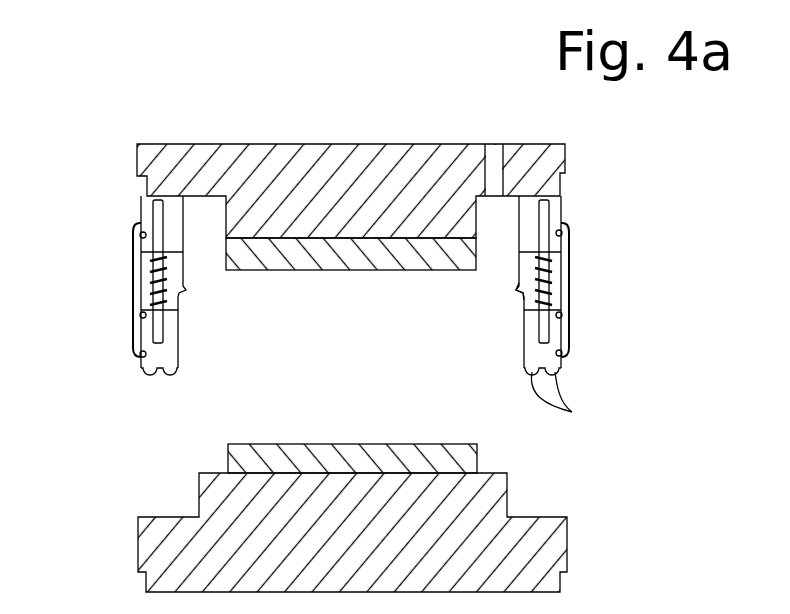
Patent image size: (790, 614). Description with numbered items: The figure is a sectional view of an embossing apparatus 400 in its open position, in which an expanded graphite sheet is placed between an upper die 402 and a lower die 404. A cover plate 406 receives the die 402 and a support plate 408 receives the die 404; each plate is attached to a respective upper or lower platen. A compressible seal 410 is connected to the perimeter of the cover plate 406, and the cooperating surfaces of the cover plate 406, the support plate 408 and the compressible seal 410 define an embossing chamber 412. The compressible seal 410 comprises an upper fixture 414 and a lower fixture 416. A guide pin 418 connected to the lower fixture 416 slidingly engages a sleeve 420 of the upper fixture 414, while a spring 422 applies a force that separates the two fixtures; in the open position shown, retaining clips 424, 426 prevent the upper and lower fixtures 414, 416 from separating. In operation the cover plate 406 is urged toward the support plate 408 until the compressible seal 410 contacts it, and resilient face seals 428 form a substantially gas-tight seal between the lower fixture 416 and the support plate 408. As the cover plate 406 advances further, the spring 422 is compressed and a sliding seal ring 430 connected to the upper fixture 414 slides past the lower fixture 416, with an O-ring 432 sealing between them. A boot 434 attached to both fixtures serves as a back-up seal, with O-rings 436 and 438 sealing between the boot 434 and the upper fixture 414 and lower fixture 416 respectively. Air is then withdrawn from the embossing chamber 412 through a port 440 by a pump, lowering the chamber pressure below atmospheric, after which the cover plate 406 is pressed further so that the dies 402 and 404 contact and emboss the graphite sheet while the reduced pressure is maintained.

The embossing apparatus 400 is at (172, 42).
The die 402 is at (305, 272).
The die 404 is at (295, 444).
The cover plate 406 is at (292, 142).
The support plate 408 is at (567, 545).
The compressible seal 410 is at (672, 194).
The embossing chamber 412 is at (352, 362).
The upper fixture 414 is at (143, 203).
The lower fixture 416 is at (138, 368).
The guide pin 418 is at (145, 333).
The sleeve 420 is at (155, 215).
The spring 422 is at (150, 262).
The retaining clip 424 is at (512, 278).
The retaining clip 426 is at (522, 330).
The resilient face seal 428 is at (576, 398).
The sliding seal ring 430 is at (138, 300).
The O-ring 432 is at (566, 316).
The boot 434 is at (134, 286).
The O-ring 436 is at (566, 232).
The O-ring 438 is at (566, 352).
The port 440 is at (497, 146).